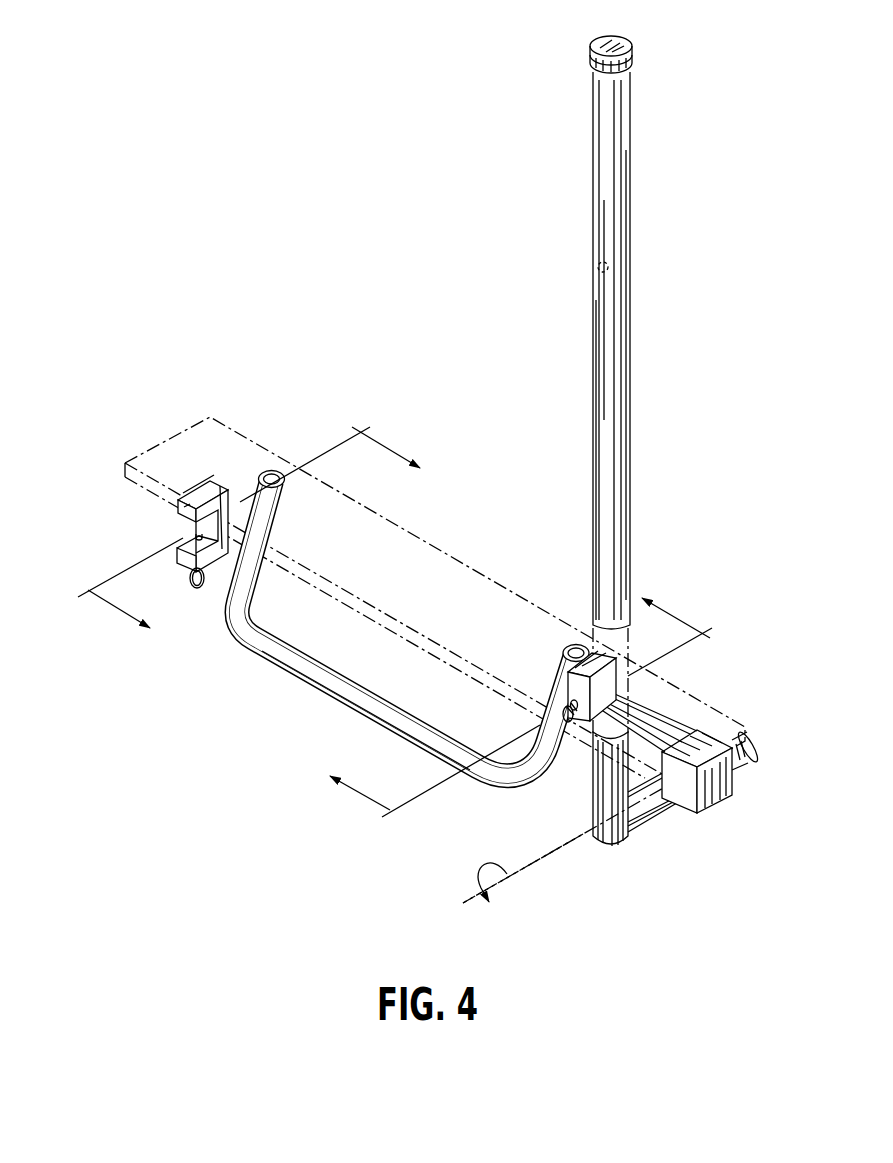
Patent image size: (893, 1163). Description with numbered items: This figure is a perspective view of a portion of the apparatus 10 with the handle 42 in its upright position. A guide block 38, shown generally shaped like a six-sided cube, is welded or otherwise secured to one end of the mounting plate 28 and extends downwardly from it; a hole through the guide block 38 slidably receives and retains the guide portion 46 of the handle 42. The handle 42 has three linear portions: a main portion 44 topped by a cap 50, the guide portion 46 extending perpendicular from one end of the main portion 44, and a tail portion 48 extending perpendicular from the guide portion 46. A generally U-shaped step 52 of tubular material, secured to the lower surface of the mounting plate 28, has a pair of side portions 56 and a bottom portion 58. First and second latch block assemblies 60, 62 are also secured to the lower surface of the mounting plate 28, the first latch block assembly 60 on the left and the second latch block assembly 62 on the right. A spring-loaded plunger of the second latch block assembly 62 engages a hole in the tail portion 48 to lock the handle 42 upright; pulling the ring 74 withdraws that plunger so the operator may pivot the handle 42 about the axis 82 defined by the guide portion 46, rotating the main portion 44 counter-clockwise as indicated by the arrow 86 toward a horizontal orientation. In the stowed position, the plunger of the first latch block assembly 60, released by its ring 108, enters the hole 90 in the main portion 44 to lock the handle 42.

The apparatus 10 is at (323, 174).
The mounting plate 28 is at (190, 427).
The guide block 38 is at (720, 808).
The handle 42 is at (592, 180).
The main portion 44 is at (592, 330).
The guide portion 46 is at (640, 828).
The tail portion 48 is at (666, 722).
The cap 50 is at (598, 38).
The generally U-shaped step 52 is at (250, 648).
The side portions 56 is at (282, 517).
The bottom portion 58 is at (413, 725).
The first latch block assembly 60 is at (178, 518).
The second latch block assembly 62 is at (566, 684).
The ring 74 is at (568, 733).
The axis 82 is at (533, 877).
The arrow 86 is at (483, 866).
The hole 90 is at (600, 256).
The ring 108 is at (192, 584).